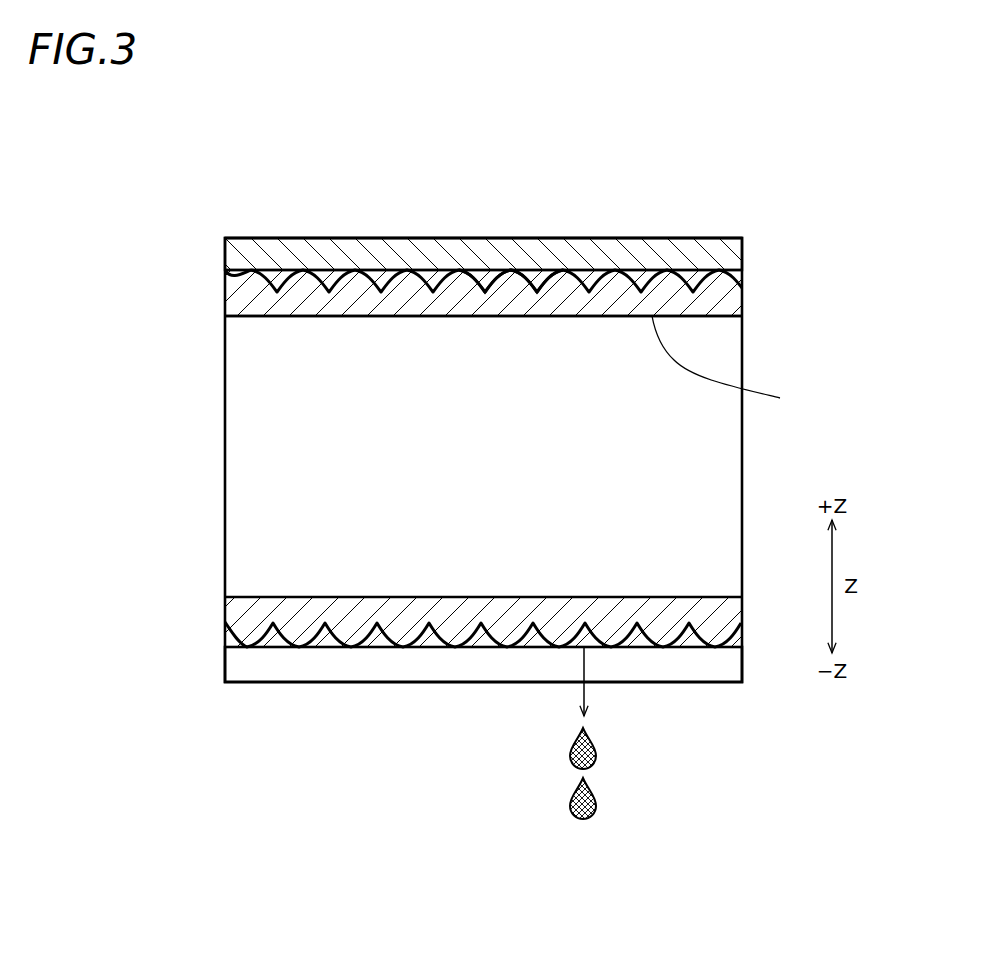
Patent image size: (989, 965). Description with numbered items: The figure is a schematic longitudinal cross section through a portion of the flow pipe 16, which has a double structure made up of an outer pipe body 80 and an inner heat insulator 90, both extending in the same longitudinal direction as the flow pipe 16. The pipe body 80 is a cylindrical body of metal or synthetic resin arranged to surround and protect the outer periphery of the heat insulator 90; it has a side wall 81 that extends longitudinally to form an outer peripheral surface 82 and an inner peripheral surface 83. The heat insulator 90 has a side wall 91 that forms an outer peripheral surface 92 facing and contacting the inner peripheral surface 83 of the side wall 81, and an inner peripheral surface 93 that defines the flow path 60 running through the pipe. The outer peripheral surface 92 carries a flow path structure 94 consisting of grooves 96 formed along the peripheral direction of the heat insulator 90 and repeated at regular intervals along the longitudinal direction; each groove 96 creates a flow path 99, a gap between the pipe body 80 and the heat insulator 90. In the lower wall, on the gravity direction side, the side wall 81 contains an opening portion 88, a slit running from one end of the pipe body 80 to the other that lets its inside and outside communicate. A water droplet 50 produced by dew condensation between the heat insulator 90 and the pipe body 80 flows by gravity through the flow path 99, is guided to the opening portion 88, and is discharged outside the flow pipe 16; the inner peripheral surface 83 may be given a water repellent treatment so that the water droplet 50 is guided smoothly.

The flow pipe 16 is at (781, 242).
The water droplet 50 is at (597, 752).
The flow path 60 is at (470, 455).
The pipe body 80 is at (696, 239).
The side wall 81 is at (418, 252).
The outer peripheral surface 82 is at (254, 238).
The inner peripheral surface 83 is at (325, 282).
The opening portion 88 is at (373, 662).
The heat insulator 90 is at (744, 311).
The side wall 91 is at (730, 363).
The outer peripheral surface 92 is at (354, 270).
The inner peripheral surface 93 is at (283, 316).
The flow path structure 94 is at (475, 281).
The groove 96 is at (478, 640).
The flow path 99 is at (538, 279).